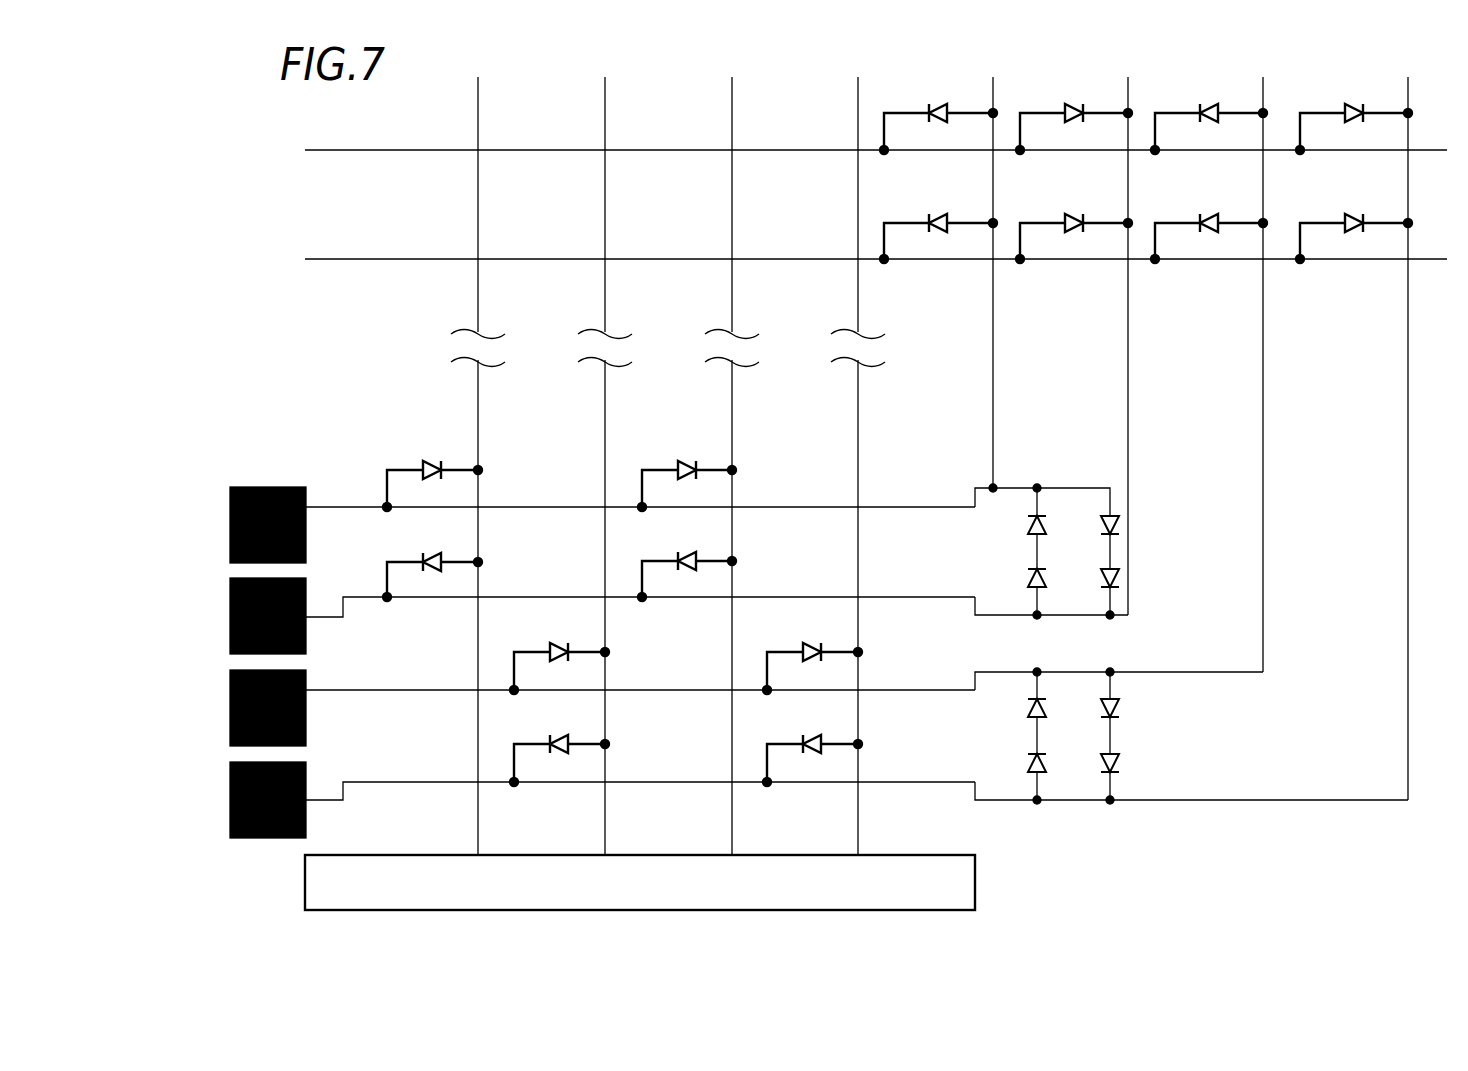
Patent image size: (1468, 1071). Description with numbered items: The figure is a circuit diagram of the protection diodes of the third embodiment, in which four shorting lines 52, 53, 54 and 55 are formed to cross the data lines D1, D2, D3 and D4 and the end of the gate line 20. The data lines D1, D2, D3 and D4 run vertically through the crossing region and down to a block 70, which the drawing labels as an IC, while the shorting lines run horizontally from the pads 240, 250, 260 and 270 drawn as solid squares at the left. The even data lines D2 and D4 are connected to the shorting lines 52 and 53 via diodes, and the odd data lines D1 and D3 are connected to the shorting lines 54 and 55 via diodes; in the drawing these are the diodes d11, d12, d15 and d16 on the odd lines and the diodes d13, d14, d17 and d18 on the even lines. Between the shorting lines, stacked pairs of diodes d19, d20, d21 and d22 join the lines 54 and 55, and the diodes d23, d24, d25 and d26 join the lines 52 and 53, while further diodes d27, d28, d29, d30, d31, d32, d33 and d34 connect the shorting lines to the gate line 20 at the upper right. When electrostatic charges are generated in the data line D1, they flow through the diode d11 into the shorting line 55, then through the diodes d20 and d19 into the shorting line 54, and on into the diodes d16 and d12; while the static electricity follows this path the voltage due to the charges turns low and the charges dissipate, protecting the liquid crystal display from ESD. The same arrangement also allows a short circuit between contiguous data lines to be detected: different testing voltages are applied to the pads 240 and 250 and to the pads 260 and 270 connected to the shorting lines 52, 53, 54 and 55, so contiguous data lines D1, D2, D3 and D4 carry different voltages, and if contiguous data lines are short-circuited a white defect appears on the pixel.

The gate line 20 is at (425, 152).
The data line D1 is at (478, 388).
The data line D2 is at (605, 388).
The data line D3 is at (732, 388).
The data line D4 is at (858, 388).
The shorting line 52 is at (385, 690).
The shorting line 53 is at (385, 782).
The shorting line 54 is at (343, 507).
The shorting line 55 is at (372, 597).
The COG IC 70 is at (975, 882).
The pad 240 is at (230, 522).
The pad 250 is at (230, 614).
The pad 260 is at (230, 706).
The pad 270 is at (230, 799).
The diode d11 is at (432, 565).
The diode d12 is at (432, 474).
The diode d13 is at (559, 748).
The diode d14 is at (559, 656).
The diode d15 is at (687, 564).
The diode d16 is at (687, 474).
The diode d17 is at (812, 748).
The diode d18 is at (812, 656).
The diode d19 is at (1014, 526).
The diode d20 is at (1014, 579).
The diode d21 is at (1087, 526).
The diode d22 is at (1087, 579).
The diode d23 is at (1014, 709).
The diode d24 is at (1014, 764).
The diode d25 is at (1133, 709).
The diode d26 is at (1133, 764).
The diode d27 is at (938, 117).
The diode d28 is at (1074, 117).
The diode d29 is at (1209, 117).
The diode d30 is at (1354, 117).
The diode d31 is at (938, 226).
The diode d32 is at (1074, 226).
The diode d33 is at (1209, 226).
The diode d34 is at (1354, 226).